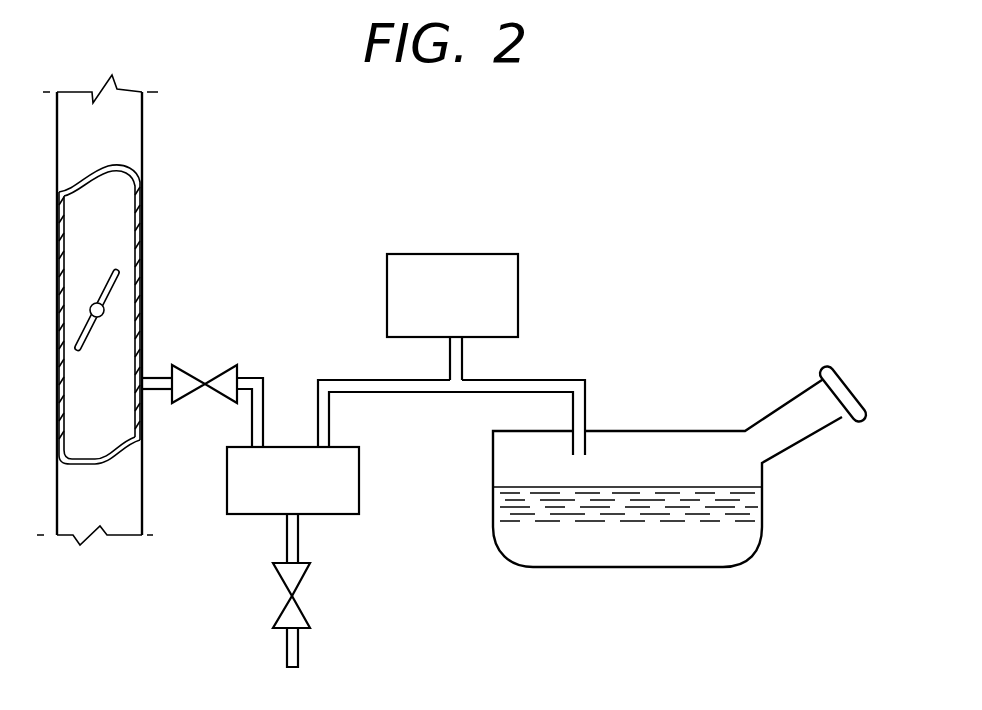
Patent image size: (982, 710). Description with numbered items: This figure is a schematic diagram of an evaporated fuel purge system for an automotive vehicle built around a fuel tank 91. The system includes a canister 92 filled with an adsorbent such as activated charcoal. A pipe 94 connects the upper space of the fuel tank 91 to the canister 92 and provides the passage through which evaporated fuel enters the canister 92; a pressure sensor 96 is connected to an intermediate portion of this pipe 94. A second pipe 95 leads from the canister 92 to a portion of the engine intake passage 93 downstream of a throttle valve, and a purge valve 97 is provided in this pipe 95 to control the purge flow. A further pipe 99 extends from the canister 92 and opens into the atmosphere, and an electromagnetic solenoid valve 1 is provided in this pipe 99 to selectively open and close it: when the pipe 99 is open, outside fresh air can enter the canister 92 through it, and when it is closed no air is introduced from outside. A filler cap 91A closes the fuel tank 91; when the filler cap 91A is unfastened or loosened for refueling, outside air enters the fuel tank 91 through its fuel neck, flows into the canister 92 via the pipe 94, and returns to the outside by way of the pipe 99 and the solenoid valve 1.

The solenoid valve 1 is at (296, 575).
The fuel tank 91 is at (562, 567).
The filler cap 91A is at (835, 370).
The canister 92 is at (359, 476).
The engine intake passage 93 is at (143, 229).
The pipe 94 is at (542, 380).
The pipe 95 is at (257, 380).
The pressure sensor 96 is at (518, 282).
The purge valve 97 is at (186, 378).
The pipe 99 is at (287, 537).